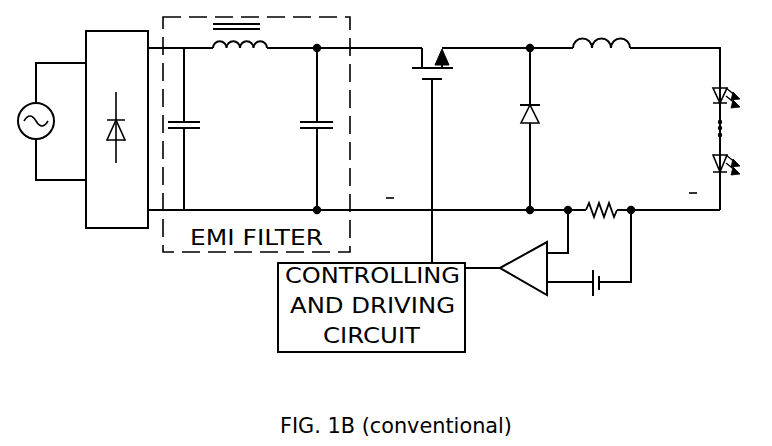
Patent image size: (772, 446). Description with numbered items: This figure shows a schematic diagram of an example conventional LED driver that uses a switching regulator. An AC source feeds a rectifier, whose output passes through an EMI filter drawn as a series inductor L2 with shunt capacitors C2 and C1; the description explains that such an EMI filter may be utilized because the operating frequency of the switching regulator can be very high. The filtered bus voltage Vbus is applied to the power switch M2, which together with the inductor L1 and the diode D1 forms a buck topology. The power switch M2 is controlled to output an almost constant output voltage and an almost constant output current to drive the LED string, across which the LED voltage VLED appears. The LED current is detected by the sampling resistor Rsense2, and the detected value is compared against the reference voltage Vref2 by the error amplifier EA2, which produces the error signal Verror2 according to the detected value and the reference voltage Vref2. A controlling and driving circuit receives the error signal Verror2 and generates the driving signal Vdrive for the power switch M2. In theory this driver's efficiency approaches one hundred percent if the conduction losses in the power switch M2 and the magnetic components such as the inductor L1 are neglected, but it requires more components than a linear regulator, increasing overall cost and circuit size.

The EMI filter inductor L2 is at (248, 47).
The EMI filter capacitor C2 is at (192, 131).
The EMI filter capacitor C1 is at (307, 132).
The power switch M2 is at (413, 47).
The bus voltage Vbus is at (394, 124).
The drive voltage signal Vdrive is at (432, 177).
The diode D1 is at (522, 113).
The inductor L1 is at (596, 42).
The LED string voltage VLED is at (700, 124).
The sampling resistor Rsense2 is at (601, 203).
The error amplifier EA2 is at (450, 240).
The error signal Verror2 is at (491, 270).
The reference voltage Vref2 is at (597, 297).